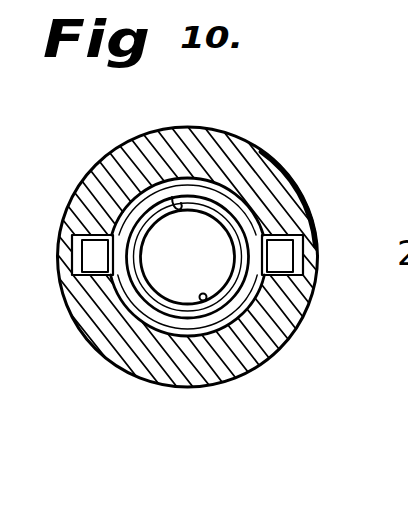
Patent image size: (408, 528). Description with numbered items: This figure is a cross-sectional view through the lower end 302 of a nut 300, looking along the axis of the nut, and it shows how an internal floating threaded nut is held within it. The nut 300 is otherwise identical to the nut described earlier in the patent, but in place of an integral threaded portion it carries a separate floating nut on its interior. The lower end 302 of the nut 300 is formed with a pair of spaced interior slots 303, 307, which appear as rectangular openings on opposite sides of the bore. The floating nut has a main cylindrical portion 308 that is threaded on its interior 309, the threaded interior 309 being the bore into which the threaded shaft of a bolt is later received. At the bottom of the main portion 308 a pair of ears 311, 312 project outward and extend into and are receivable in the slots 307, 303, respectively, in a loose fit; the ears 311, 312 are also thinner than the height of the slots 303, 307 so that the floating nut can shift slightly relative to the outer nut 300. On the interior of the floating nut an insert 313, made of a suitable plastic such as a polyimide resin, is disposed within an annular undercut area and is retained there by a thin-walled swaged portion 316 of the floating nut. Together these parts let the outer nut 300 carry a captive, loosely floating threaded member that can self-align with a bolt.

The nut 300 is at (266, 132).
The lower end 302 is at (118, 371).
The interior slot 303 is at (301, 307).
The interior slot 307 is at (80, 283).
The main cylindrical portion 308 is at (282, 341).
The interior 309 is at (206, 302).
The ear 311 is at (95, 249).
The ear 312 is at (284, 247).
The insert 313 is at (172, 197).
The swaged portion 316 is at (178, 325).